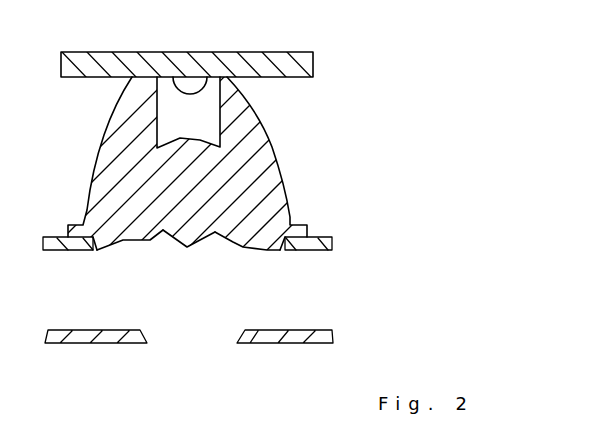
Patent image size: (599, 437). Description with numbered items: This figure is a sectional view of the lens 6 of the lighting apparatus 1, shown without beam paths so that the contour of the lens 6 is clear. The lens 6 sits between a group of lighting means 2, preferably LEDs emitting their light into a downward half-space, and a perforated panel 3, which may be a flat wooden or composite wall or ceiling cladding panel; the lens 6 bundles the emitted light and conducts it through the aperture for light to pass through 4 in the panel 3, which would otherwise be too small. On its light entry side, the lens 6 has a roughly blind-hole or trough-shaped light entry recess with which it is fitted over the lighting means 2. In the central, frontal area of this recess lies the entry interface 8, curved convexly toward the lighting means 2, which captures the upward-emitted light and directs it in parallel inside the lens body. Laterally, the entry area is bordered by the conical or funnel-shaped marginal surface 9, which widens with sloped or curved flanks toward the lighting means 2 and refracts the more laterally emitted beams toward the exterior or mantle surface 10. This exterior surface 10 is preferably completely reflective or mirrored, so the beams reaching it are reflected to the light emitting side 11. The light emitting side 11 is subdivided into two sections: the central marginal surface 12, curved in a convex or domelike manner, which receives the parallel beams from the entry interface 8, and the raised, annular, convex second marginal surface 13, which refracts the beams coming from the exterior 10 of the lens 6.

The lighting apparatus 1 is at (238, 152).
The lighting means 2 is at (204, 76).
The perforated panel 3 is at (328, 333).
The aperture for light to pass through 4 is at (225, 335).
The lens 6 is at (262, 135).
The entry interface 8 is at (188, 112).
The marginal surface 9 is at (192, 124).
The exterior or mantle surface 10 is at (270, 150).
The light emitting side 11 is at (243, 248).
The central marginal surface 12 is at (200, 247).
The second marginal surface 13 is at (130, 247).